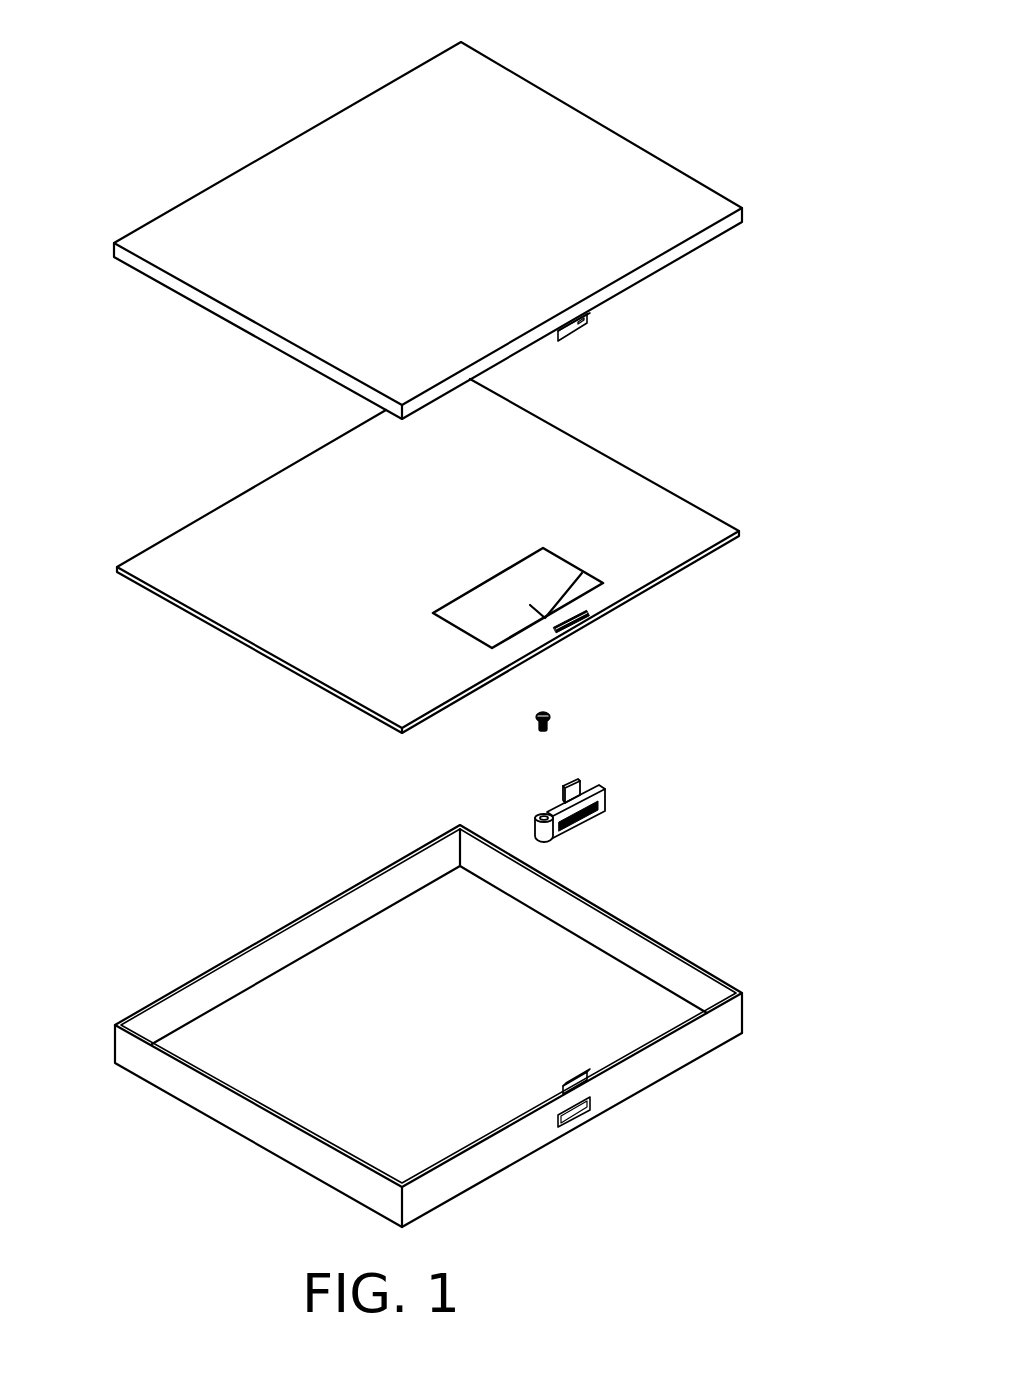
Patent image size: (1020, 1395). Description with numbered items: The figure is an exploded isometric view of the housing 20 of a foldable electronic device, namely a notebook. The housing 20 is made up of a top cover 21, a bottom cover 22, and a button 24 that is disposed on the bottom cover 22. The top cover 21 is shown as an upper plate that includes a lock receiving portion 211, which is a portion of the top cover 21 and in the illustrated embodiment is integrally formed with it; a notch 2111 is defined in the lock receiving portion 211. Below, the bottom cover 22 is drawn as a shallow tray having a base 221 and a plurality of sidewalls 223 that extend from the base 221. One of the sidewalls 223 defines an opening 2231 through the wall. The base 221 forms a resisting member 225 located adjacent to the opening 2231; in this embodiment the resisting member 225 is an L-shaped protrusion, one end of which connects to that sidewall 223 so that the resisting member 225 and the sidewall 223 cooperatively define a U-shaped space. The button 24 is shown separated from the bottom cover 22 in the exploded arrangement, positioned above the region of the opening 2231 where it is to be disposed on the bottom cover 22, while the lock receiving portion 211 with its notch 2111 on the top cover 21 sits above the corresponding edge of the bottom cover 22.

The housing 20 is at (565, 45).
The top cover 21 is at (428, 230).
The lock receiving portion 211 is at (640, 326).
The notch 2111 is at (588, 322).
The bottom cover 22 is at (439, 1041).
The base 221 is at (587, 1022).
The sidewalls 223 is at (572, 1125).
The opening 2231 is at (577, 1114).
The resisting member 225 is at (582, 1082).
The button 24 is at (600, 801).